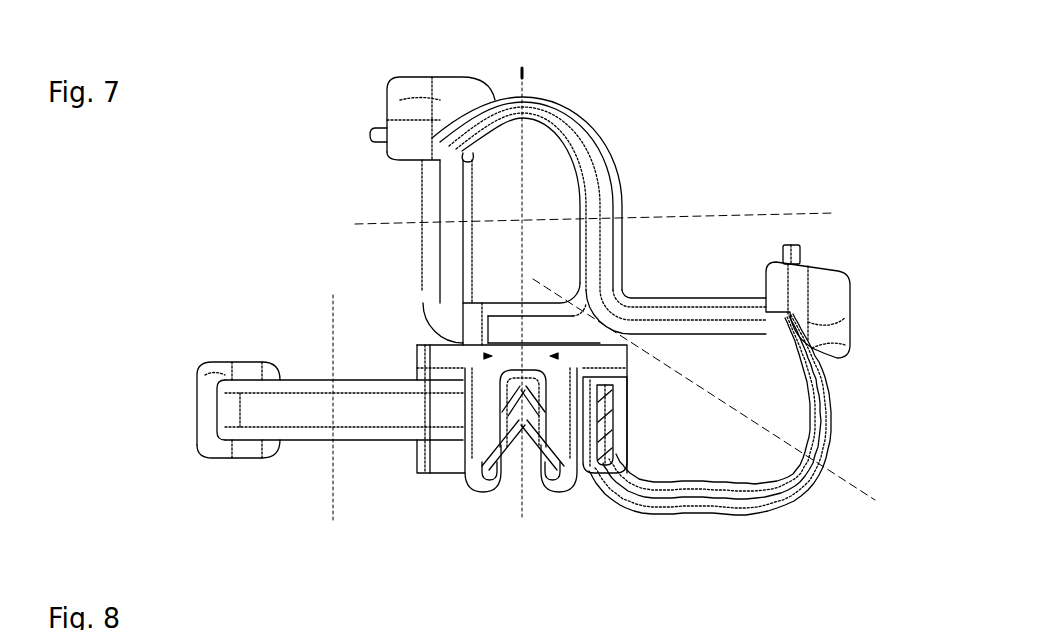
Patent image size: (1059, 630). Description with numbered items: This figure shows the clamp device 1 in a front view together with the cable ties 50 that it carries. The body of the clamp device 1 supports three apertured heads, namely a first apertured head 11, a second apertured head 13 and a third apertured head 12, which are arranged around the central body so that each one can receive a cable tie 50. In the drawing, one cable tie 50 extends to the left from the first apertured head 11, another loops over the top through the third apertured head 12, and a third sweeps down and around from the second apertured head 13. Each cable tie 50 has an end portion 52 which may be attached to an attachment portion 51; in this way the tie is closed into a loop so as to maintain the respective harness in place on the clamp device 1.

The clamp device 1 is at (541, 514).
The first apertured head 11 is at (417, 458).
The third apertured head 12 is at (463, 312).
The second apertured head 13 is at (622, 438).
The cable tie 50 is at (280, 407).
The attachment portion 51 is at (403, 150).
The end portion 52 is at (363, 132).